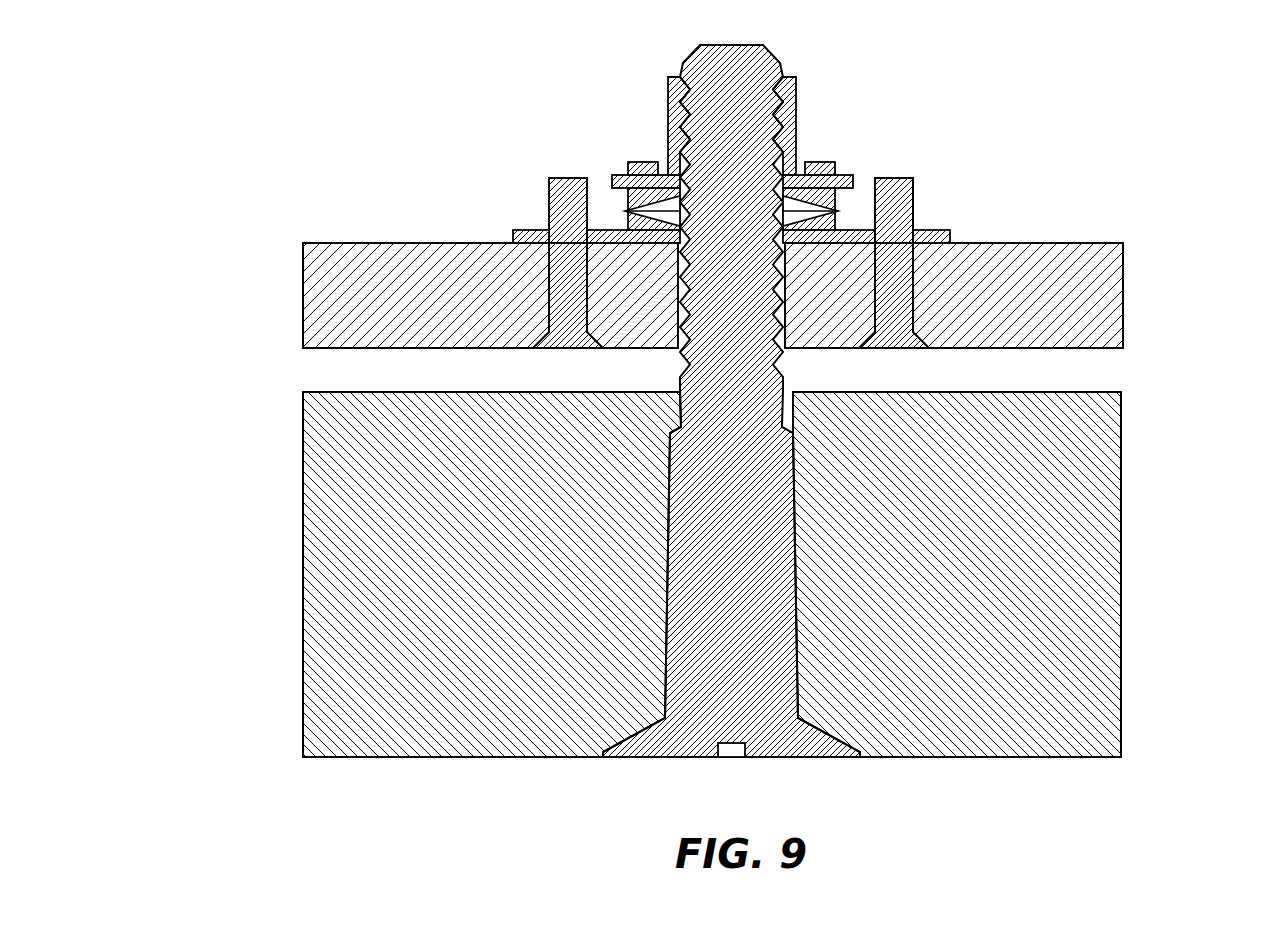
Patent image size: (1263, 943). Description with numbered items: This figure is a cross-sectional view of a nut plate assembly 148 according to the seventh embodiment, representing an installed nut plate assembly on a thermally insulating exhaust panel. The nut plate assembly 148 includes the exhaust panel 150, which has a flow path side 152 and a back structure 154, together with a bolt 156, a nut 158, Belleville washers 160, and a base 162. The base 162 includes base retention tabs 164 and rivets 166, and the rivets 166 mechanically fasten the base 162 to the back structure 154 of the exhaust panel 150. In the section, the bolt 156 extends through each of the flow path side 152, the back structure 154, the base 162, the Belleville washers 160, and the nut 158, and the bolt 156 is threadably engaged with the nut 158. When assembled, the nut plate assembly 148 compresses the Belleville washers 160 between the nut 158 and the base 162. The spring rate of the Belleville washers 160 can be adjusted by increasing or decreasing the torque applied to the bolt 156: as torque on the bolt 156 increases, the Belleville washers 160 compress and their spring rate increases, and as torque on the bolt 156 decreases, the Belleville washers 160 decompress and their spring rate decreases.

The nut plate assembly 148 is at (823, 144).
The exhaust panel 150 is at (703, 500).
The flow path side 152 is at (1132, 557).
The back structure 154 is at (1132, 302).
The bolt 156 is at (656, 764).
The nut 158 is at (802, 97).
The Belleville washers 160 is at (648, 186).
The base 162 is at (517, 225).
The base retention tabs 164 is at (827, 155).
The rivets 166 is at (544, 275).